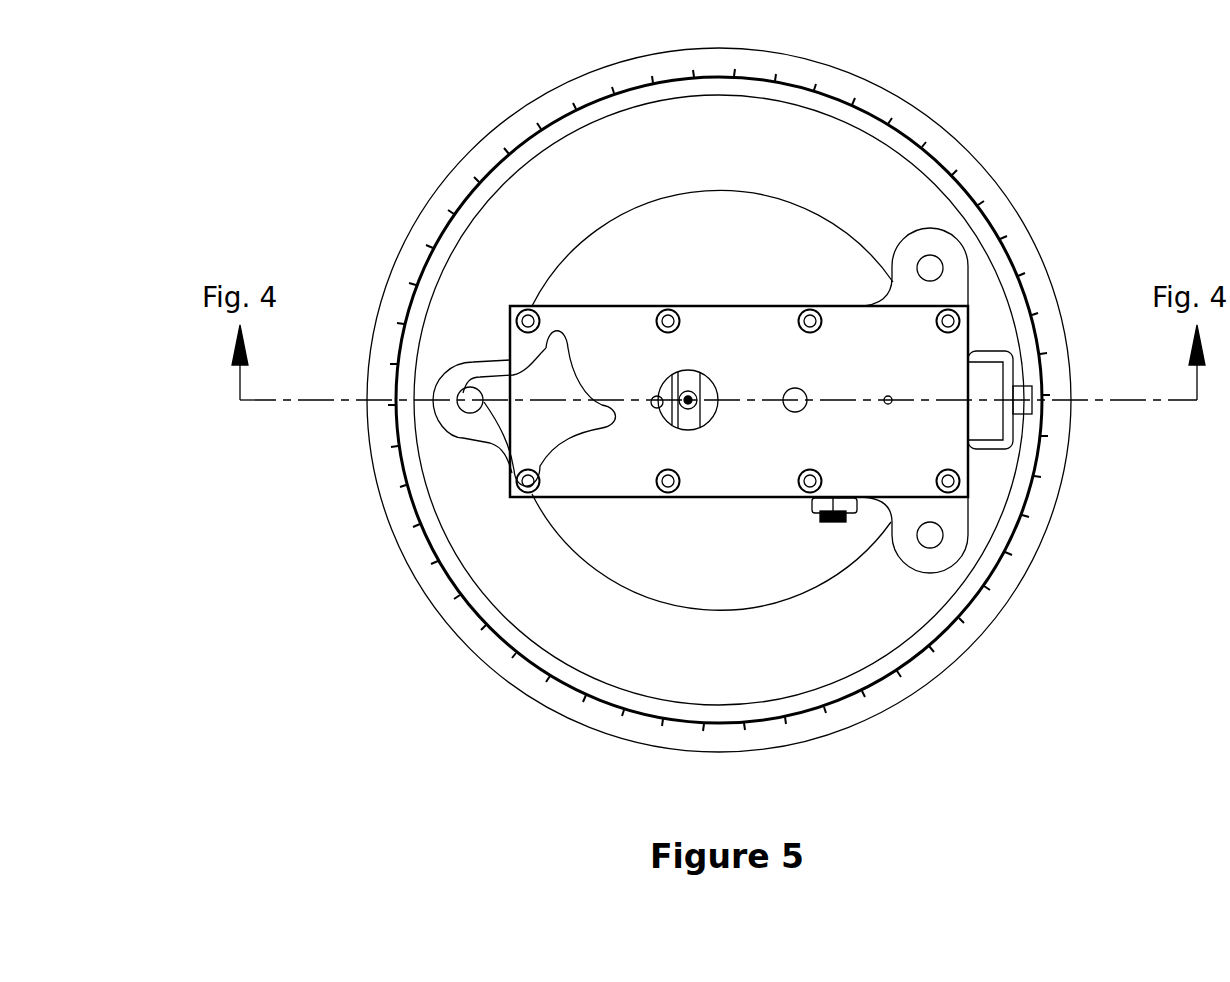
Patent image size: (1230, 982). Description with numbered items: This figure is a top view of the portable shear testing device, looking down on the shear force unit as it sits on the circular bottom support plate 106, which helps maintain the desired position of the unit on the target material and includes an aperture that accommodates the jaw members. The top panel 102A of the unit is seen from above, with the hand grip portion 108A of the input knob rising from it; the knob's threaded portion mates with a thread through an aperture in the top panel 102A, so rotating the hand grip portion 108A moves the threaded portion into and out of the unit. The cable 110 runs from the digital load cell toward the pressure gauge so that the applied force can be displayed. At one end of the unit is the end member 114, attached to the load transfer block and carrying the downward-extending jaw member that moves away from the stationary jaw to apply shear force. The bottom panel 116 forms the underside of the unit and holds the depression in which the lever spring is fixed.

The circular bottom support plate 106 is at (455, 165).
The top panel 102A is at (738, 323).
The hand grip portion 108A is at (535, 383).
The cable 110 is at (688, 408).
The end member 114 is at (983, 432).
The bottom panel 116 is at (958, 527).